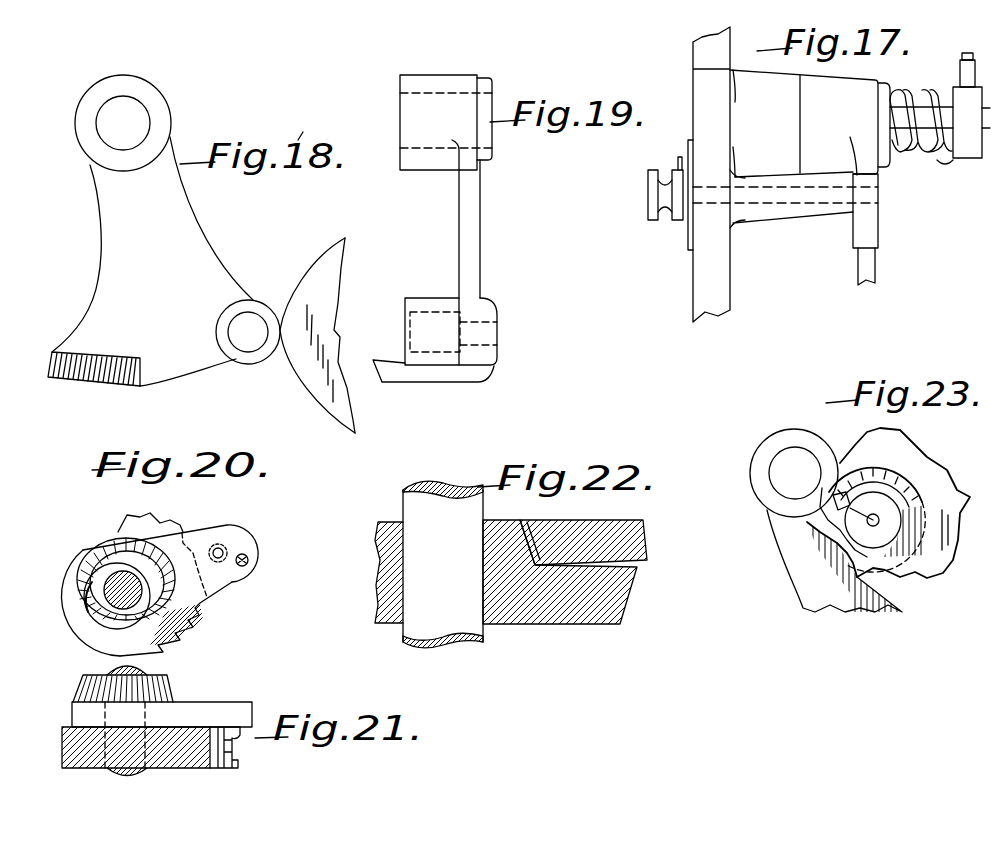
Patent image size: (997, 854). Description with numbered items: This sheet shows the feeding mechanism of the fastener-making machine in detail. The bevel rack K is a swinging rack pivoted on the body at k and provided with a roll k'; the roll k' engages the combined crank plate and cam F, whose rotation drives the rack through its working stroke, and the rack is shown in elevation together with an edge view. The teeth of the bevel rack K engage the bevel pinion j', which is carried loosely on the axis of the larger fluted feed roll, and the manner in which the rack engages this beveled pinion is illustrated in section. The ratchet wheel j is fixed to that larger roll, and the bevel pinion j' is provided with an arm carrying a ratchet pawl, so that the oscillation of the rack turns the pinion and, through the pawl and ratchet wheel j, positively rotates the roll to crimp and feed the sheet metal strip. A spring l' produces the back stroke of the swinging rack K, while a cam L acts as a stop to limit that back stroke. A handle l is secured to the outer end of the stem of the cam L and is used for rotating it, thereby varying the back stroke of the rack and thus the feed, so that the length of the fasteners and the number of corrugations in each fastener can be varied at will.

In FIG. 18, the pivot k is at (146, 123).
In FIG. 19, the pivot k is at (466, 109).
In FIG. 17, the pivot k is at (813, 114).
In FIG. 23, the pivot k is at (791, 461).
In FIG. 18, the roll k' is at (241, 352).
In FIG. 19, the roll k' is at (478, 320).
In FIG. 18, the bevel rack K is at (92, 382).
In FIG. 19, the bevel rack K is at (384, 384).
In FIG. 23, the bevel rack K is at (830, 623).
In FIG. 22, the bevel rack K is at (697, 503).
In FIG. 18, the cam piece F' is at (313, 326).
In FIG. 17, the handle l is at (661, 212).
In FIG. 23, the handle l is at (835, 529).
In FIG. 17, the cam L is at (872, 227).
In FIG. 23, the cam L is at (967, 500).
In FIG. 17, the spring l' is at (940, 131).
In FIG. 20, the ratchet wheel j is at (155, 582).
In FIG. 21, the ratchet wheel j is at (127, 766).
In FIG. 20, the bevel pinion j' is at (92, 584).
In FIG. 21, the bevel pinion j' is at (140, 674).
In FIG. 22, the bevel pinion j' is at (458, 576).